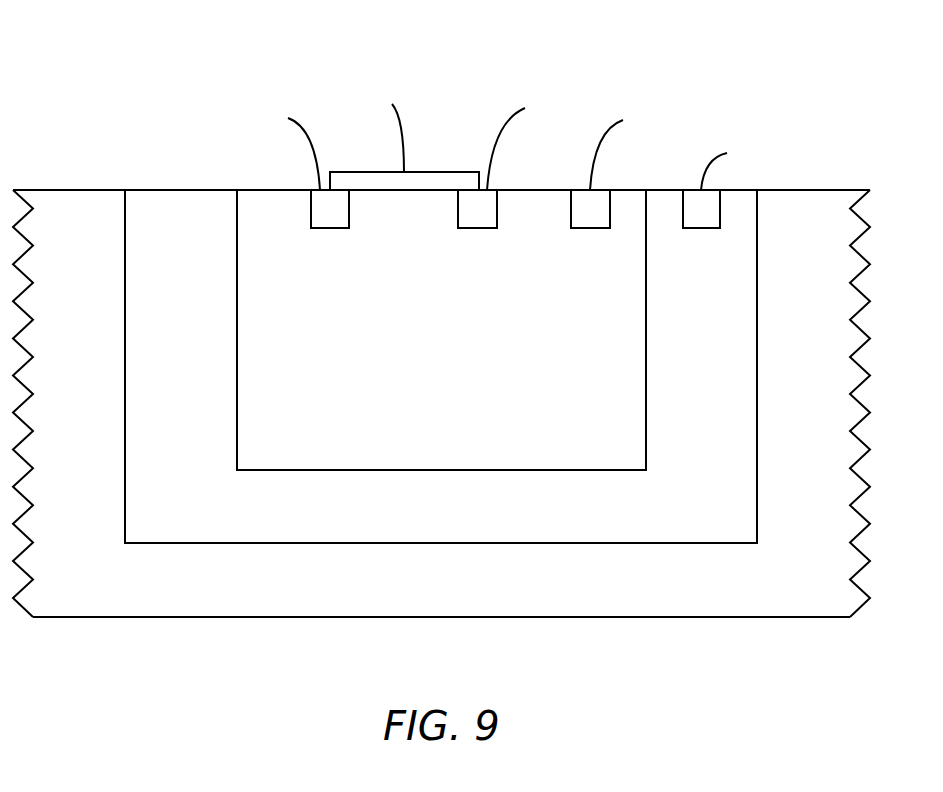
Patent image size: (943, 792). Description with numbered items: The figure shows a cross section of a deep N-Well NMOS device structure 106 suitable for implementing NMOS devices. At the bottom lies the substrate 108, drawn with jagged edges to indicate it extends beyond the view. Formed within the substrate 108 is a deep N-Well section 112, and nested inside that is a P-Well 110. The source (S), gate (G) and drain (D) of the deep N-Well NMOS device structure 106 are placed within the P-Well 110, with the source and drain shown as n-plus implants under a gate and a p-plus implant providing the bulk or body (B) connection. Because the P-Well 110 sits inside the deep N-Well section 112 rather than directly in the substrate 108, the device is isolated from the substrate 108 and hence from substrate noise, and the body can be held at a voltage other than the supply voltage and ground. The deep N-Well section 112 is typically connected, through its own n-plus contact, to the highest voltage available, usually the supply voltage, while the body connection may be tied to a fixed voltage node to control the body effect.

The deep N-Well NMOS device structure 106 is at (222, 76).
The substrate 108 is at (572, 590).
The P-Well 110 is at (534, 438).
The deep N-Well section 112 is at (572, 522).